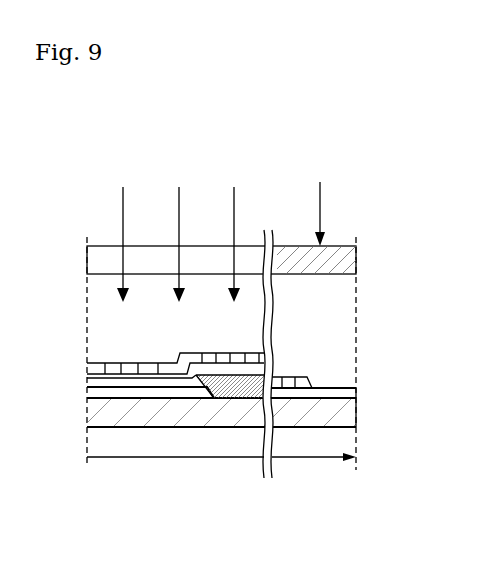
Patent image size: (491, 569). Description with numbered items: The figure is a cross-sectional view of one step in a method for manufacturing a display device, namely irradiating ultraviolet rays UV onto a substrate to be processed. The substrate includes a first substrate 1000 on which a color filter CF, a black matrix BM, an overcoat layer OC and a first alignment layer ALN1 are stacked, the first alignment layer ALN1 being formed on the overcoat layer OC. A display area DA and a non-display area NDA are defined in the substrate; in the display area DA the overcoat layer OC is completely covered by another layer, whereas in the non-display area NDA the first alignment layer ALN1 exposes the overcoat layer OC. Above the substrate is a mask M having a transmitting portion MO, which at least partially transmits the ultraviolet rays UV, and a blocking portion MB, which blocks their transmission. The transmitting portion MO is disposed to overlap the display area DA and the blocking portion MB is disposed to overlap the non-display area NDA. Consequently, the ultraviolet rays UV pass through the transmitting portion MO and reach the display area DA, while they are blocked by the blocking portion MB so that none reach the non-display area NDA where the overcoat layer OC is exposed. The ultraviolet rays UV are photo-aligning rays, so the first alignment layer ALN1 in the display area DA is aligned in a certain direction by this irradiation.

The ultraviolet rays UV is at (179, 227).
The mask M is at (221, 221).
The transmitting portion MO is at (252, 255).
The blocking portion MB is at (325, 253).
The first alignment layer ALN1 is at (303, 383).
The overcoat layer OC is at (350, 393).
The color filter CF is at (142, 393).
The black matrix BM is at (213, 395).
The first substrate 1000 is at (345, 408).
The display area DA is at (175, 475).
The non-display area NDA is at (314, 472).